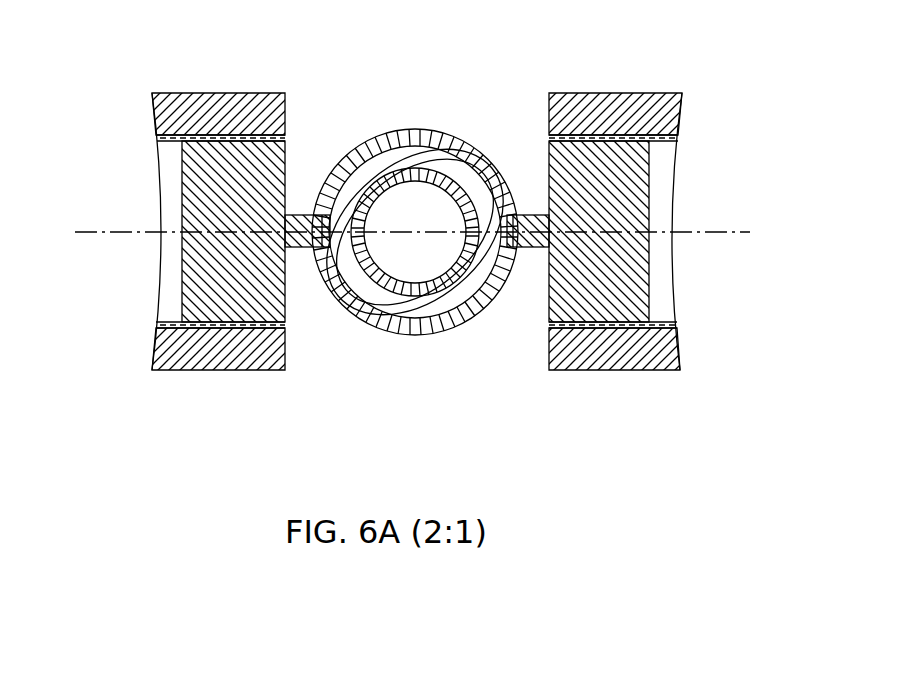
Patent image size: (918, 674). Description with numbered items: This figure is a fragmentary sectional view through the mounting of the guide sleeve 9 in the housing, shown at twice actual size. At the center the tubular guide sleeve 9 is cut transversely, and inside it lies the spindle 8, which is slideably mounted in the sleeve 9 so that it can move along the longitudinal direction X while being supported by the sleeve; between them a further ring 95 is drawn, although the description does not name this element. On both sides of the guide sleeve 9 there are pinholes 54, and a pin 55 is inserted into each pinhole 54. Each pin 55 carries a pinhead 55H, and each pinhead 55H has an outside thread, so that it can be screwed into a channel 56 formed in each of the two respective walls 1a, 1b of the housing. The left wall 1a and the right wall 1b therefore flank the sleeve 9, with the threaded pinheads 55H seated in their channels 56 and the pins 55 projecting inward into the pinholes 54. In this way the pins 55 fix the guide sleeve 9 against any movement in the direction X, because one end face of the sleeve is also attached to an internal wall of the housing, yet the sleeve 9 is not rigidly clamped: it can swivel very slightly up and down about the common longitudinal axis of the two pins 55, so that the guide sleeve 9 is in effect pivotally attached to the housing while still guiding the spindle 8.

The wall of the housing 1a is at (252, 110).
The wall of the housing 1b is at (608, 108).
The spindle 8 is at (340, 172).
The inner ring of sealing element 95 is at (395, 160).
The guide sleeve 9 is at (450, 145).
The pinhole 54 is at (421, 174).
The pin 55 is at (525, 208).
The pinhead 55H is at (635, 215).
The channel 56 is at (173, 228).